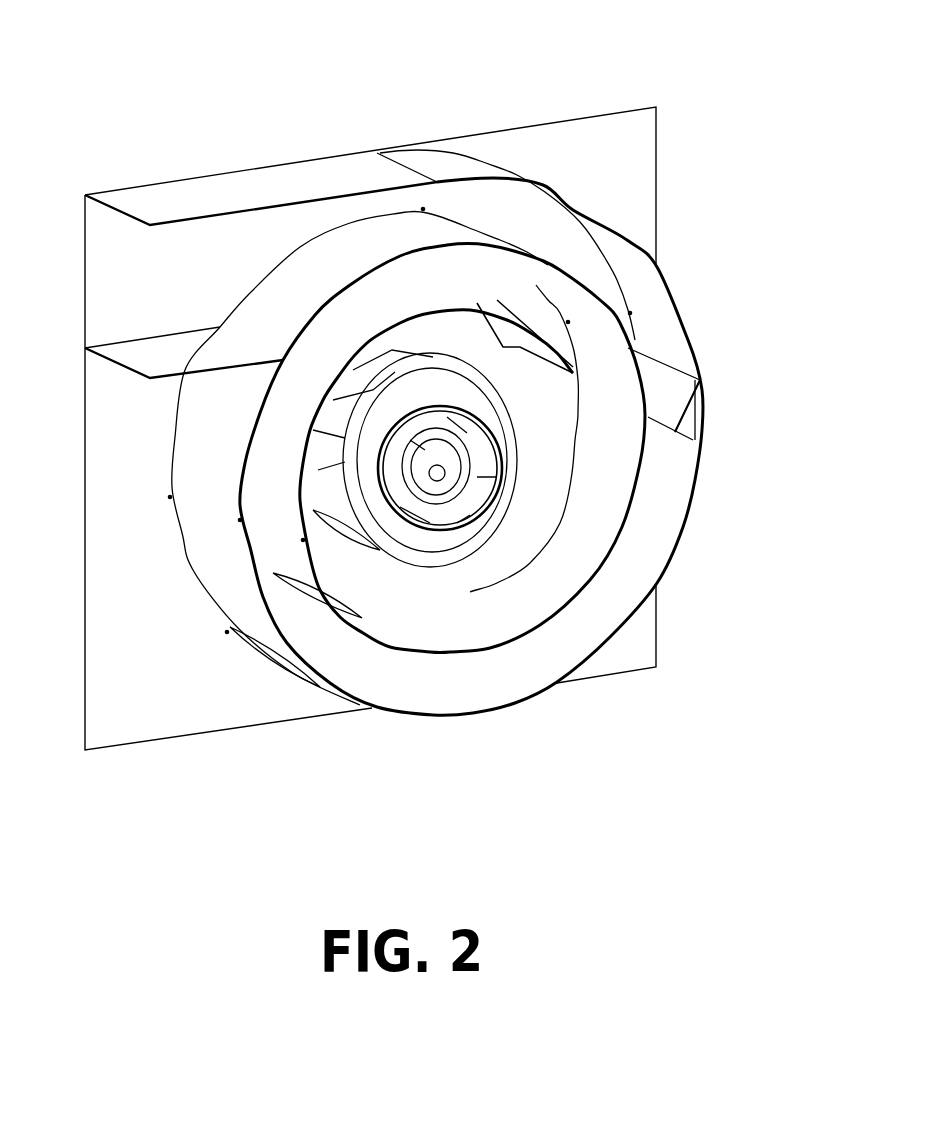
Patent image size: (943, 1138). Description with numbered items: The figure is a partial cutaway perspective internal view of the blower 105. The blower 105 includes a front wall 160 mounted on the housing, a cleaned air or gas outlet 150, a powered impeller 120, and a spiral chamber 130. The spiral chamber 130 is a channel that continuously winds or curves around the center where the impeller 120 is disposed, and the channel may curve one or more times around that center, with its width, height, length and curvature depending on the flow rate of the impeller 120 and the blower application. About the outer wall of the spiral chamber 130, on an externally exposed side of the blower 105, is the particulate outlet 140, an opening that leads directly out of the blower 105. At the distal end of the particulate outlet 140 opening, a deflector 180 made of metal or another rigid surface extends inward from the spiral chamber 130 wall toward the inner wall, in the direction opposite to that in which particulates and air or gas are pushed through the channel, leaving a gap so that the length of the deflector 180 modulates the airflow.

The blower 105 is at (275, 91).
The powered impeller 120 is at (437, 472).
The spiral chamber 130 is at (437, 275).
The particulate outlet 140 is at (692, 422).
The cleaned air or gas outlet 150 is at (140, 293).
The front wall 160 is at (503, 135).
The deflector 180 is at (682, 400).